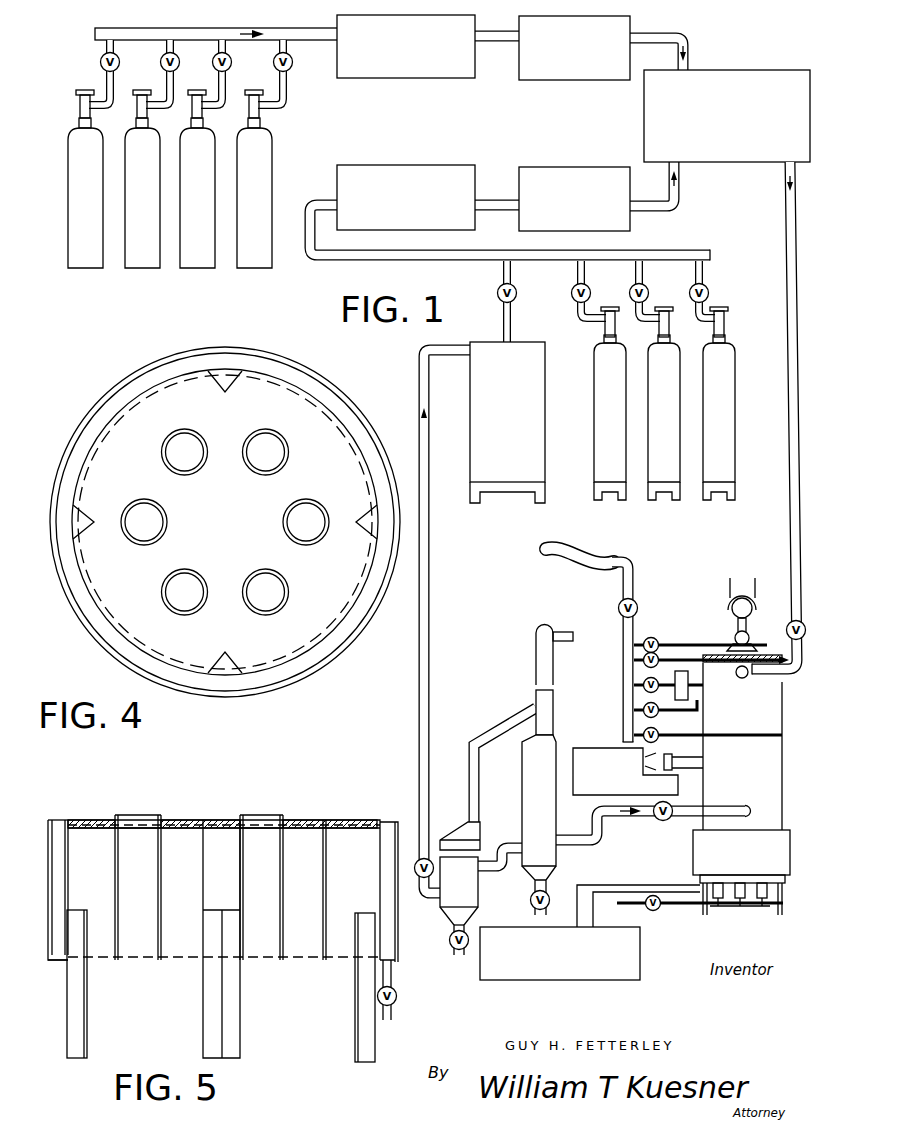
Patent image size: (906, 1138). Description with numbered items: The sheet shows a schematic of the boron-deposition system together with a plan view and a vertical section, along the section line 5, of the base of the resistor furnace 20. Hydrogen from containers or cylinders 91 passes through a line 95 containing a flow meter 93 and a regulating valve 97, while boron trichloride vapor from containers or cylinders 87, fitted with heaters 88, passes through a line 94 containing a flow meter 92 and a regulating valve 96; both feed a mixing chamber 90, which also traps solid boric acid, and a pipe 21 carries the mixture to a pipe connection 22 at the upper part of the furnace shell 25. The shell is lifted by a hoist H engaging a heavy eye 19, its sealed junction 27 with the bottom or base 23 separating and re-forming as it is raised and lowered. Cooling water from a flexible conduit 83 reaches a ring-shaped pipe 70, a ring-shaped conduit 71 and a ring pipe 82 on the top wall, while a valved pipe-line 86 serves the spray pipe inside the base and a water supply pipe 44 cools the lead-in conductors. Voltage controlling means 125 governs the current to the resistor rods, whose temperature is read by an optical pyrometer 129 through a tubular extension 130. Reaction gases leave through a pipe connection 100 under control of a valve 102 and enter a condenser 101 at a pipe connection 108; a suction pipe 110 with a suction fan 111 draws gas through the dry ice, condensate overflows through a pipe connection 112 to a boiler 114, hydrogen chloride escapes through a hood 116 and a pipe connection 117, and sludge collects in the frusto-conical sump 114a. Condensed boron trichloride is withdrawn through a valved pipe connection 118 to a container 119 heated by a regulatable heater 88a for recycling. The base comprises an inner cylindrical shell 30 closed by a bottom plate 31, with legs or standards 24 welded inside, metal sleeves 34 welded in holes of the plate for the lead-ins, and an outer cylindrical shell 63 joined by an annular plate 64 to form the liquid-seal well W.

In FIG. 1, the hydrogen containers or cylinders 91 is at (180, 154).
In FIG. 1, the hydrogen supply line 95 is at (328, 42).
In FIG. 1, the regulating valve 97 is at (415, 78).
In FIG. 1, the flow meter 93 is at (578, 80).
In FIG. 1, the regulating valve 96 is at (412, 165).
In FIG. 1, the boron trichloride supply line 94 is at (499, 200).
In FIG. 1, the flow meter 92 is at (570, 167).
In FIG. 1, the mixing chamber 90 is at (745, 72).
In FIG. 1, the pipe 21 is at (789, 283).
In FIG. 1, the container 119 is at (484, 577).
In FIG. 1, the regulatable heater 88a is at (535, 503).
In FIG. 1, the boron trichloride containers or cylinders 87 is at (654, 371).
In FIG. 1, the heaters 88 is at (652, 497).
In FIG. 1, the flexible conduit 83 is at (572, 549).
In FIG. 1, the pipe connection and valves 118 is at (430, 720).
In FIG. 1, the pipe connection 117 is at (513, 718).
In FIG. 1, the pipe connection 112 is at (505, 845).
In FIG. 1, the pipe connection 108 is at (572, 845).
In FIG. 1, the valve 102 is at (663, 822).
In FIG. 1, the suction pipe 110 is at (553, 712).
In FIG. 1, the suction fan 111 is at (540, 626).
In FIG. 1, the condenser 101 is at (516, 792).
In FIG. 1, the hood 116 is at (451, 824).
In FIG. 1, the boiler 114 is at (459, 906).
In FIG. 1, the frusto-conical sump 114a is at (452, 920).
In FIG. 1, the optical pyrometer 129 is at (590, 748).
In FIG. 1, the tubular extension 130 is at (672, 762).
In FIG. 1, the ring-shaped pipe 70 is at (707, 665).
In FIG. 1, the ring-shaped conduit 71 is at (783, 735).
In FIG. 1, the furnace shell 25 is at (781, 760).
In FIG. 1, the resistor furnace 20 is at (791, 786).
In FIG. 1, the ring pipe 82 is at (768, 652).
In FIG. 1, the hoist H is at (757, 580).
In FIG. 1, the eye 19 is at (733, 640).
In FIG. 1, the pipe connection 22 is at (742, 679).
In FIG. 1, the pipe connection 100 is at (742, 808).
In FIG. 1, the separable seal or junction 27 is at (805, 818).
In FIG. 1, the water supply pipe 44 is at (730, 907).
In FIG. 1, the legs or standards 24 is at (701, 912).
In FIG. 4, the legs or standards 24 is at (233, 658).
In FIG. 5, the legs or standards 24 is at (87, 1005).
In FIG. 1, the bottom or base 23 is at (693, 880).
In FIG. 1, the water supply pipe-line 86 is at (620, 904).
In FIG. 1, the voltage controlling means 125 is at (640, 966).
In FIG. 4, the outer cylindrical shell 63 is at (372, 621).
In FIG. 5, the outer cylindrical shell 63 is at (50, 930).
In FIG. 4, the bottom plate 31 is at (334, 628).
In FIG. 5, the bottom plate 31 is at (340, 822).
In FIG. 4, the inner cylindrical shell 30 is at (300, 652).
In FIG. 5, the inner cylindrical shell 30 is at (65, 840).
In FIG. 4, the annular well W is at (275, 673).
In FIG. 5, the annular well W is at (49, 868).
In FIG. 4, the metal sleeve 34 is at (309, 499).
In FIG. 5, the metal sleeve 34 is at (175, 815).
In FIG. 4, the section line 5 is at (35, 522).
In FIG. 5, the annular plate or wall 64 is at (58, 963).